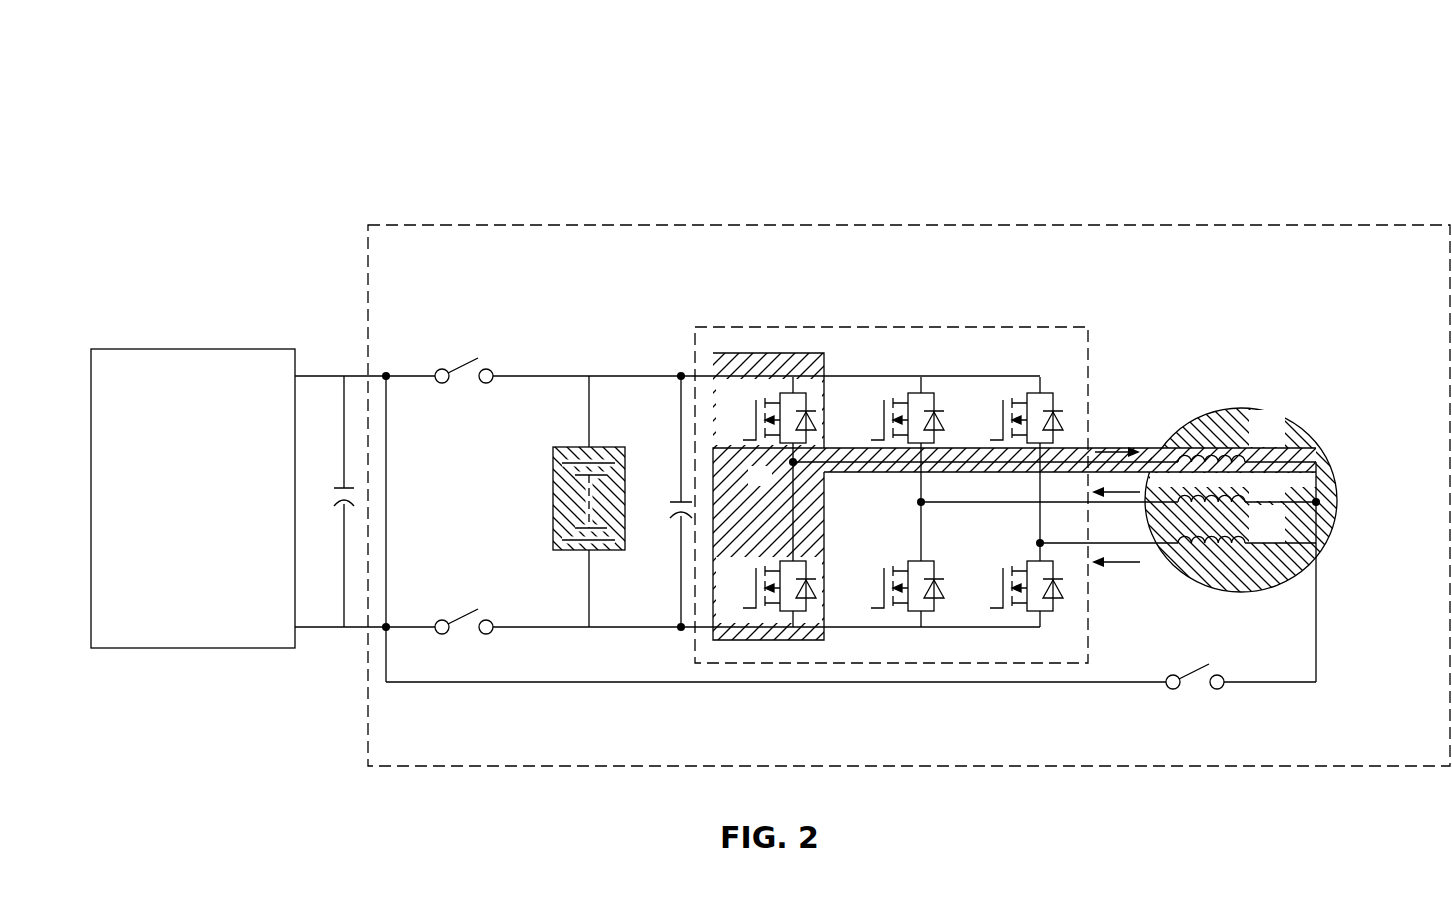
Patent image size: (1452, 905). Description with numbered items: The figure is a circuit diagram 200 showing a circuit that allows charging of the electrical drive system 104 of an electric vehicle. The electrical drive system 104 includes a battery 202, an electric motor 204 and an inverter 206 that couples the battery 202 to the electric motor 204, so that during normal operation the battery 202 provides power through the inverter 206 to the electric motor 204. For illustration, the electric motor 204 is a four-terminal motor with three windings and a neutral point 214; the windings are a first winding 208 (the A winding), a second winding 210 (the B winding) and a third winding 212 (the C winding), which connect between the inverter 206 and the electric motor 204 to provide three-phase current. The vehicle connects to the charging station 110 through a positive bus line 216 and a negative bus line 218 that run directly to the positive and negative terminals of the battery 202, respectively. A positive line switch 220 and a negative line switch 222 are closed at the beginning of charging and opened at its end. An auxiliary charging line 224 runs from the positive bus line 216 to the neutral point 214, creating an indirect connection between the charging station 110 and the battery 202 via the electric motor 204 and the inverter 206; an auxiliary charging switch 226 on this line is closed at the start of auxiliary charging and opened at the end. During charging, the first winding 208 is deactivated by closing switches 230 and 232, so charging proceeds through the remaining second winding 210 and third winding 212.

The circuit diagram 200 is at (1296, 137).
The electrical drive system 104 is at (940, 225).
The charging station 110 is at (231, 349).
The battery 202 is at (604, 447).
The electric motor 204 is at (1305, 438).
The inverter 206 is at (907, 327).
The first winding 208 is at (1092, 446).
The second winding 210 is at (980, 504).
The third winding 212 is at (1150, 548).
The neutral point 214 is at (1320, 505).
The positive bus line 216 is at (535, 376).
The negative bus line 218 is at (530, 628).
The positive line switch 220 is at (460, 378).
The negative line switch 222 is at (457, 628).
The auxiliary charging line 224 is at (648, 683).
The auxiliary charging switch 226 is at (1196, 670).
The switch 230 is at (787, 415).
The switch 232 is at (790, 612).